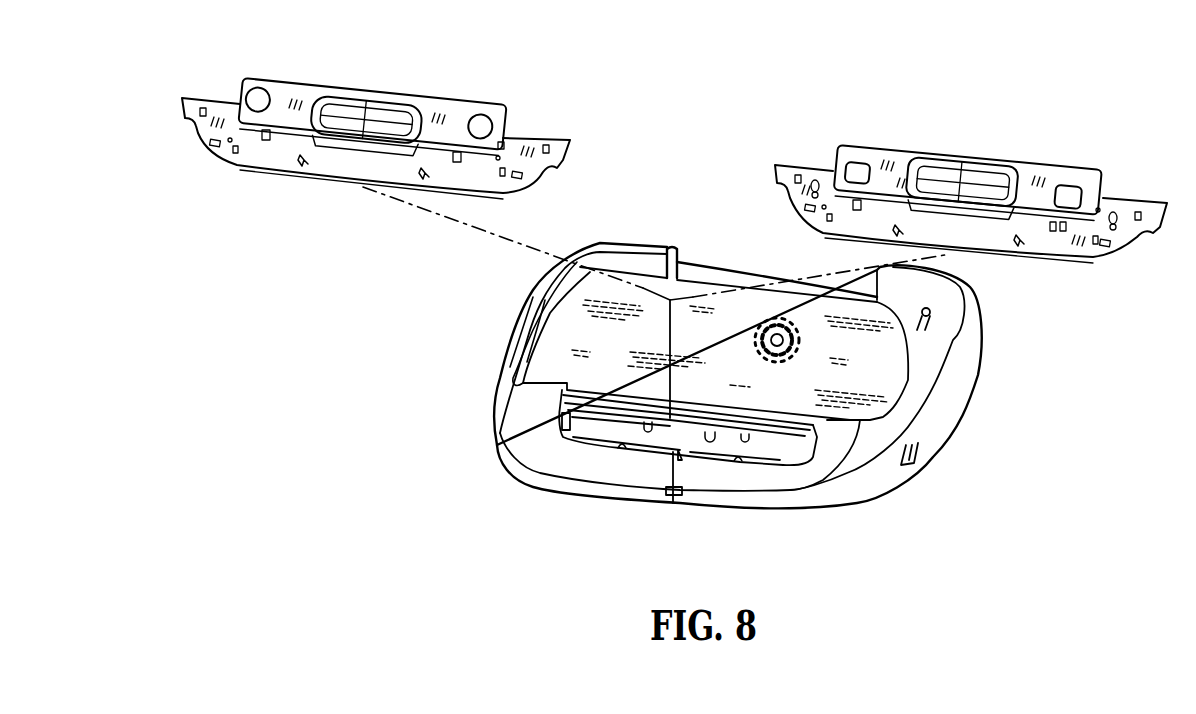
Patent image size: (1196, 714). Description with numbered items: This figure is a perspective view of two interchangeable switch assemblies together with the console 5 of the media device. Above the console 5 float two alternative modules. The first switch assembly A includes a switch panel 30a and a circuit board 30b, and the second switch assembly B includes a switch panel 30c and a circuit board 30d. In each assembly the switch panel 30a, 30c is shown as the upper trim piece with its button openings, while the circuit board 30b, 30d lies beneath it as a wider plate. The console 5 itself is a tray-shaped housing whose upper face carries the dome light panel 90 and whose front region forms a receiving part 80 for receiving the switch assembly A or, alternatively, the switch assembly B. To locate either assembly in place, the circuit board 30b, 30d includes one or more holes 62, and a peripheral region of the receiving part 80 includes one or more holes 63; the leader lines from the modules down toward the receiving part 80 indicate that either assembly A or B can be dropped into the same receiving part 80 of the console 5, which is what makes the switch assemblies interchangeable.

The console 5 is at (975, 425).
The dome light panel 90 is at (537, 407).
The receiving part 80 is at (773, 452).
The holes 63 is at (622, 450).
The holes 62 is at (422, 174).
The switch panel 30a is at (453, 100).
The circuit board 30b is at (563, 157).
The switch panel 30c is at (847, 142).
The circuit board 30d is at (787, 162).
The first switch assembly A is at (603, 55).
The second switch assembly B is at (890, 48).